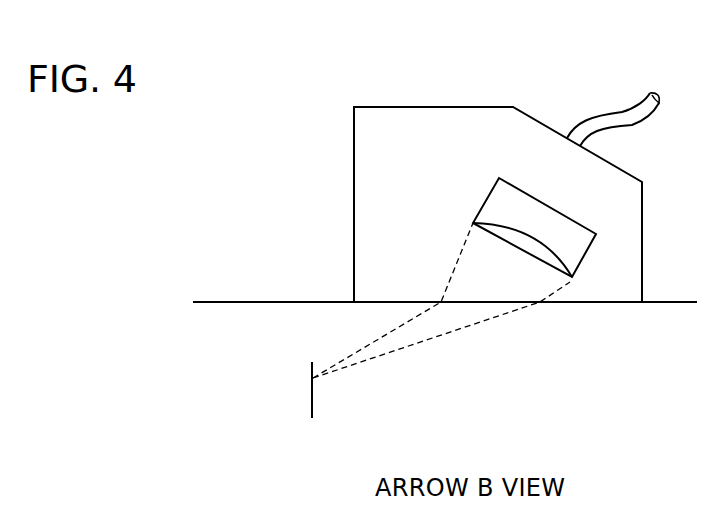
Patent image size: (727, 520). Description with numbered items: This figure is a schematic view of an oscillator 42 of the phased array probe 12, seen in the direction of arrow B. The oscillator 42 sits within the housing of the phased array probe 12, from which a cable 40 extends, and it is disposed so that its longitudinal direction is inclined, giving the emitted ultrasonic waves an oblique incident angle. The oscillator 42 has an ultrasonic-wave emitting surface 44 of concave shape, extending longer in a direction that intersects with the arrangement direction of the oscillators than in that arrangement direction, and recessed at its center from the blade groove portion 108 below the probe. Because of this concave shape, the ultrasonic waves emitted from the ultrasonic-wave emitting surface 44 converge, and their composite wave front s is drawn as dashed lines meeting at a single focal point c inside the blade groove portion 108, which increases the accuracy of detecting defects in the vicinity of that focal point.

The phased array probe 12 is at (397, 107).
The cable 40 is at (590, 113).
The oscillator 42 is at (498, 200).
The ultrasonic-wave emitting surface 44 is at (530, 235).
The blade groove portion 108 is at (193, 303).
The focal point c is at (312, 408).
The composite wave front s is at (410, 347).